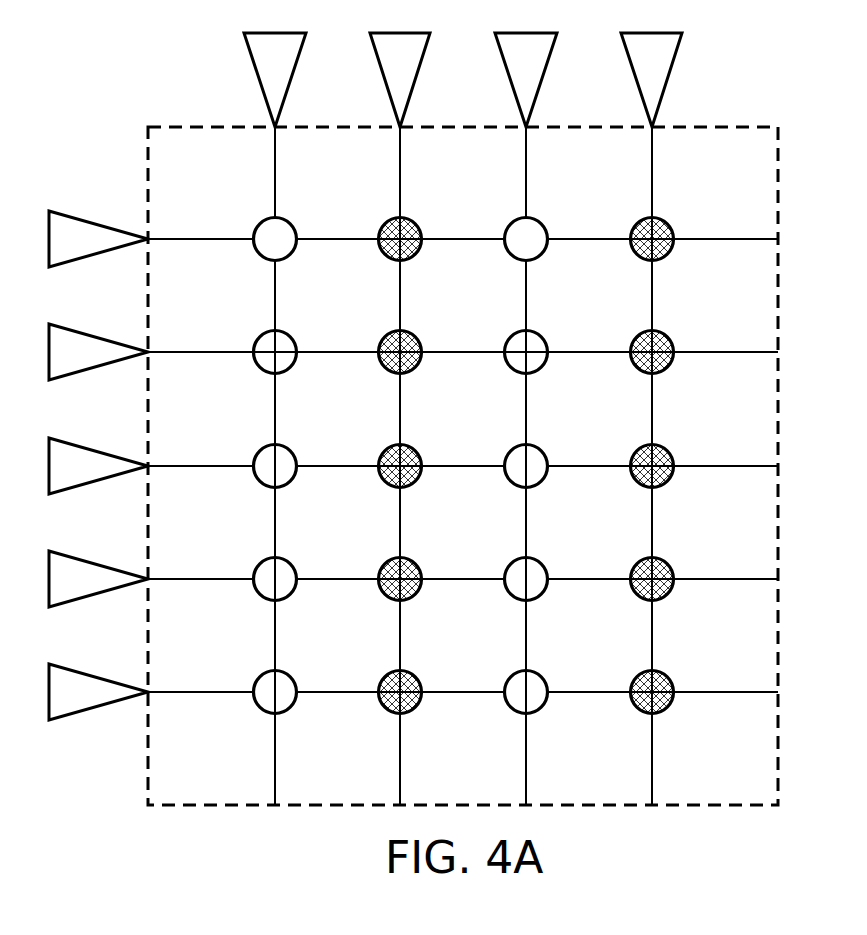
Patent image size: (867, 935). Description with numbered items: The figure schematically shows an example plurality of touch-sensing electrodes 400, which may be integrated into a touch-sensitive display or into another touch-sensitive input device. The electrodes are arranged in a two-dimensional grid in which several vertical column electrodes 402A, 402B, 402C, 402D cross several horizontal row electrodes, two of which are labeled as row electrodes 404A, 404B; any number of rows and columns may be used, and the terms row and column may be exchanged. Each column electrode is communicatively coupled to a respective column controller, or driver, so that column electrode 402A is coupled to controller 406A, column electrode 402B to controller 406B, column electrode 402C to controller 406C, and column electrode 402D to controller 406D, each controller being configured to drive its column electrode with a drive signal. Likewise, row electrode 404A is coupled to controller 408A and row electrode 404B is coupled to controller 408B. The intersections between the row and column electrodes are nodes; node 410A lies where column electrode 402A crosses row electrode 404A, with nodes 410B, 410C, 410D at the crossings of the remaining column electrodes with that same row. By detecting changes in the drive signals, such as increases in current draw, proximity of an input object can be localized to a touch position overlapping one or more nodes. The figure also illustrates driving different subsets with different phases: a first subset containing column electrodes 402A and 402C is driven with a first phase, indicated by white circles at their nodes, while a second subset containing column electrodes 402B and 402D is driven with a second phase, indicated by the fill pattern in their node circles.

The plurality of touch-sensing electrodes 400 is at (114, 82).
The column electrode 402A is at (275, 173).
The column electrode 402B is at (400, 173).
The column electrode 402C is at (526, 173).
The column electrode 402D is at (652, 173).
The row electrode 404A is at (157, 240).
The row electrode 404B is at (160, 353).
The column controller 406A is at (244, 37).
The column controller 406B is at (370, 37).
The column controller 406C is at (495, 37).
The column controller 406D is at (621, 37).
The row controller 408A is at (49, 267).
The row controller 408B is at (49, 380).
The node 410A is at (259, 225).
The node 410B is at (385, 224).
The node 410C is at (510, 224).
The node 410D is at (636, 224).